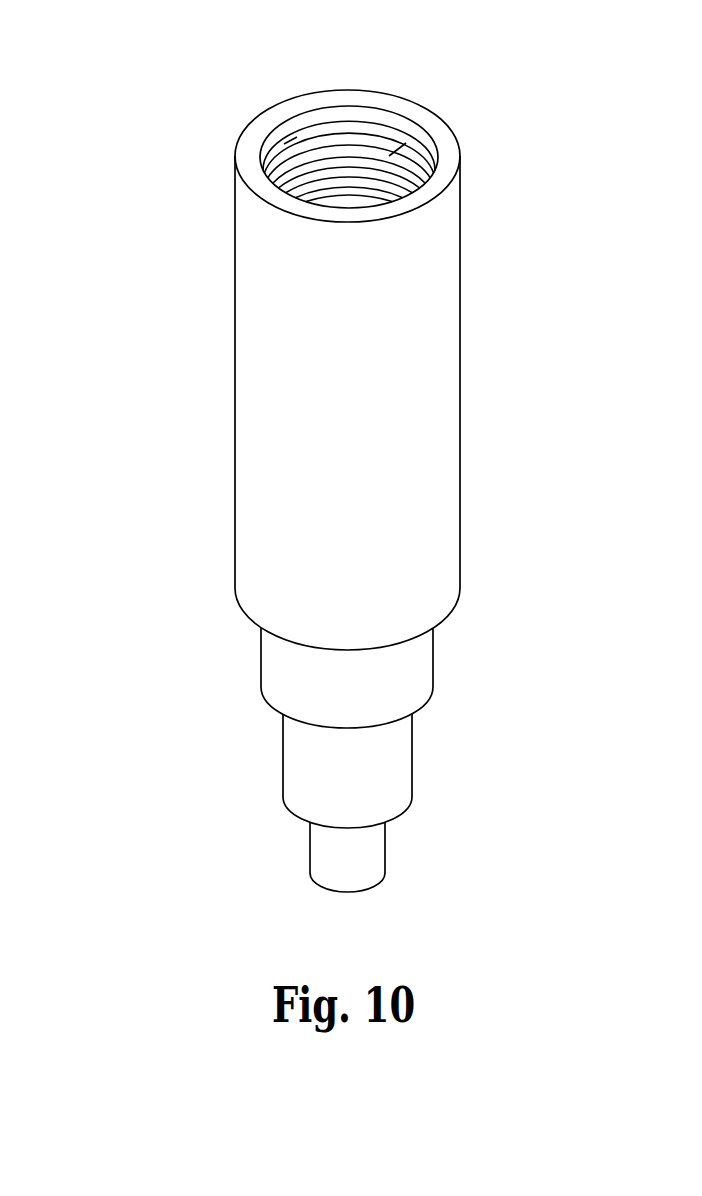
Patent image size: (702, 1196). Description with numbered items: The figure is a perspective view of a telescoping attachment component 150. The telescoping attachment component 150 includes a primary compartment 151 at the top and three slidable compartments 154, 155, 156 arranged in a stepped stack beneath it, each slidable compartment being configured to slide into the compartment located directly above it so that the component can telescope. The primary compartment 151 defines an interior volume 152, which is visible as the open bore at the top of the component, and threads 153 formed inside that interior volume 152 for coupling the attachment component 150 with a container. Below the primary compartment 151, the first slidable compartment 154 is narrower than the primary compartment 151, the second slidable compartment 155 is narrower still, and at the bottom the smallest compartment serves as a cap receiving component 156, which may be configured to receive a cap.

The telescoping attachment component 150 is at (197, 412).
The primary compartment 151 is at (367, 443).
The interior volume 152 is at (348, 187).
The threads 153 is at (407, 142).
The slidable compartment 154 is at (367, 703).
The slidable compartment 155 is at (367, 793).
The cap receiving component 156 is at (367, 875).